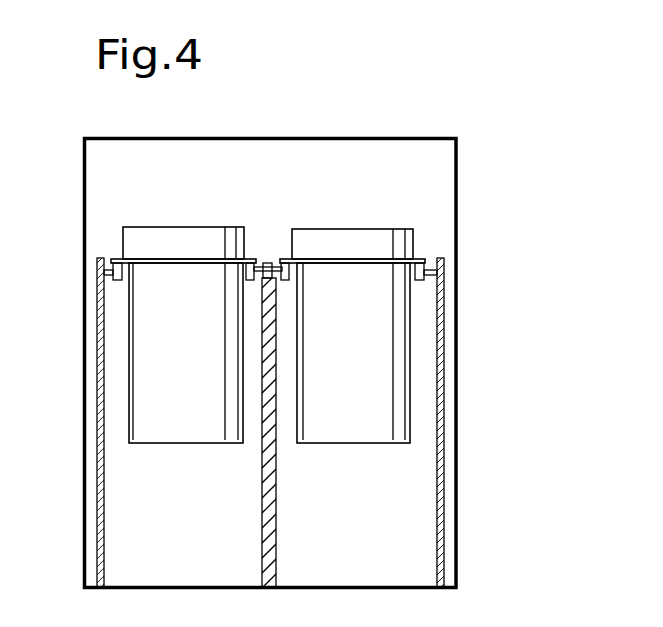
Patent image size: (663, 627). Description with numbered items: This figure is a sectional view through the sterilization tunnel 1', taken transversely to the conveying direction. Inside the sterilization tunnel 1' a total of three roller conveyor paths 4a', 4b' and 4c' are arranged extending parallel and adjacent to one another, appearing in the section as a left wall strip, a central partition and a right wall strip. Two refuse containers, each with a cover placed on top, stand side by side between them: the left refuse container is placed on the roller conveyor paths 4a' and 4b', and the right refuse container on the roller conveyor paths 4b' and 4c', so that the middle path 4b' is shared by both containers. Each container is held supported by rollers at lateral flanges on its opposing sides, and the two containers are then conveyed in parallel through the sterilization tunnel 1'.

The sterilization tunnel 1' is at (271, 322).
The roller conveyor path 4a' is at (70, 424).
The roller conveyor path 4b' is at (264, 393).
The roller conveyor path 4c' is at (468, 424).